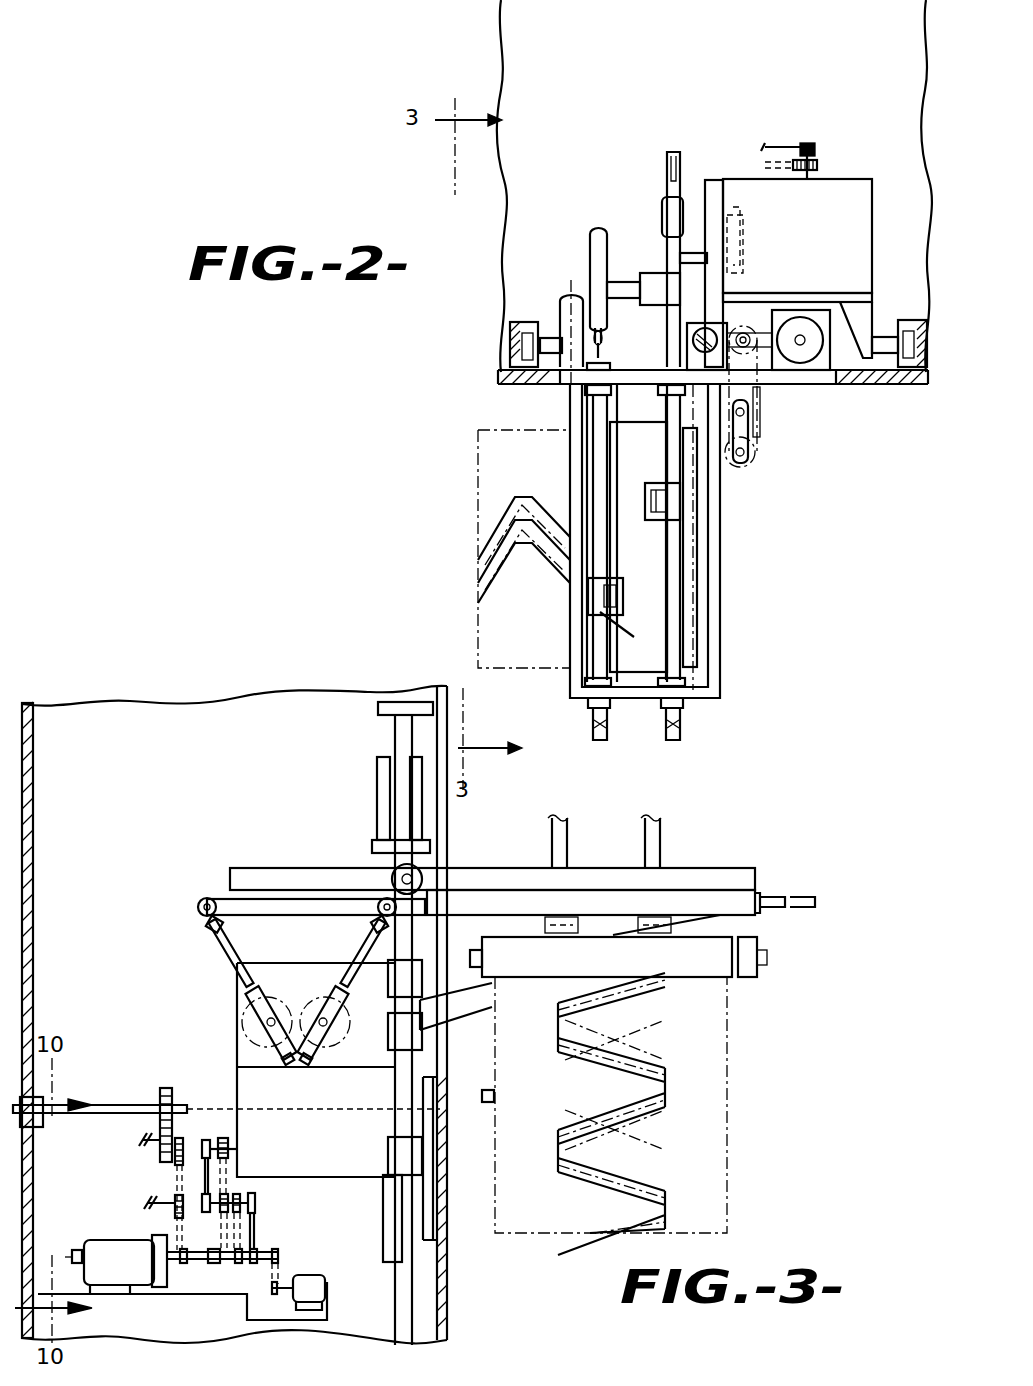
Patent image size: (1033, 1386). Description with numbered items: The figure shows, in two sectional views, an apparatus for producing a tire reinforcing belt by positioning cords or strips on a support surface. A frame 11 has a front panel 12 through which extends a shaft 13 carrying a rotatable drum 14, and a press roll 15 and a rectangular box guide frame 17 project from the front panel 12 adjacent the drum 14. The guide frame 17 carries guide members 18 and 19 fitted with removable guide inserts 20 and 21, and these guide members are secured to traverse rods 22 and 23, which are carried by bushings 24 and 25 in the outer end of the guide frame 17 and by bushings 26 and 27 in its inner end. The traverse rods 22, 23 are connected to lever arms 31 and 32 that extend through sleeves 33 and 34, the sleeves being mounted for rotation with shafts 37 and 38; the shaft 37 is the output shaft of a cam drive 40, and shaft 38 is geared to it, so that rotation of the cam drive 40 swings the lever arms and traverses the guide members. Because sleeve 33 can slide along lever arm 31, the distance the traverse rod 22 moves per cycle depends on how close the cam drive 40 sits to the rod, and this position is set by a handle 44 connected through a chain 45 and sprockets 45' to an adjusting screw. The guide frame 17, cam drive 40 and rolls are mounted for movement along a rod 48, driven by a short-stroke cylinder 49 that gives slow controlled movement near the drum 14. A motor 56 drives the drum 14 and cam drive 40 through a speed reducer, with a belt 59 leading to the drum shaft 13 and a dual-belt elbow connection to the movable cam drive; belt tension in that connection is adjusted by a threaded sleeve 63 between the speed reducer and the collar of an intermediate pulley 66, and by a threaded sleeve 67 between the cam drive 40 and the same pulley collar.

In FIG. 2, the frame 11 is at (740, 0).
In FIG. 3, the frame 11 is at (34, 796).
In FIG. 2, the front panel 12 is at (873, 385).
In FIG. 3, the front panel 12 is at (448, 1308).
In FIG. 2, the shaft 13 is at (566, 318).
In FIG. 3, the shaft 13 is at (482, 1093).
In FIG. 2, the rotatable drum 14 is at (482, 470).
In FIG. 3, the rotatable drum 14 is at (726, 1118).
In FIG. 3, the press roll 15 is at (724, 968).
In FIG. 2, the rectangular box guide frame 17 is at (712, 581).
In FIG. 3, the rectangular box guide frame 17 is at (704, 890).
In FIG. 2, the guide member 18 is at (652, 520).
In FIG. 2, the guide member 19 is at (623, 605).
In FIG. 2, the removable guide insert 20 is at (652, 488).
In FIG. 2, the removable guide insert 21 is at (632, 636).
In FIG. 2, the traverse rod 22 is at (675, 740).
In FIG. 3, the traverse rod 22 is at (275, 915).
In FIG. 2, the traverse rod 23 is at (602, 740).
In FIG. 2, the bushing 24 is at (683, 706).
In FIG. 2, the bushing 25 is at (590, 706).
In FIG. 2, the bushing 26 is at (630, 364).
In FIG. 2, the bushing 27 is at (607, 366).
In FIG. 3, the lever arm 31 is at (245, 992).
In FIG. 3, the lever arm 32 is at (348, 992).
In FIG. 3, the sleeve 33 is at (285, 1058).
In FIG. 2, the sleeve 34 is at (596, 232).
In FIG. 3, the sleeve 34 is at (307, 1058).
In FIG. 3, the shaft 37 is at (255, 1025).
In FIG. 3, the shaft 38 is at (325, 1030).
In FIG. 2, the cam drive 40 is at (852, 185).
In FIG. 3, the cam drive 40 is at (345, 1170).
In FIG. 2, the handle 44 is at (750, 428).
In FIG. 2, the chain 45 is at (769, 396).
In FIG. 2, the sprockets 45' is at (768, 454).
In FIG. 2, the rod 48 is at (718, 335).
In FIG. 3, the rod 48 is at (398, 733).
In FIG. 2, the cylinder 49 is at (799, 322).
In FIG. 3, the cylinder 49 is at (378, 805).
In FIG. 3, the motor 56 is at (84, 1243).
In FIG. 3, the belt 59 is at (176, 1180).
In FIG. 3, the sleeve 63 is at (255, 1236).
In FIG. 3, the intermediate pulley 66 is at (198, 1232).
In FIG. 3, the sleeve 67 is at (203, 1178).